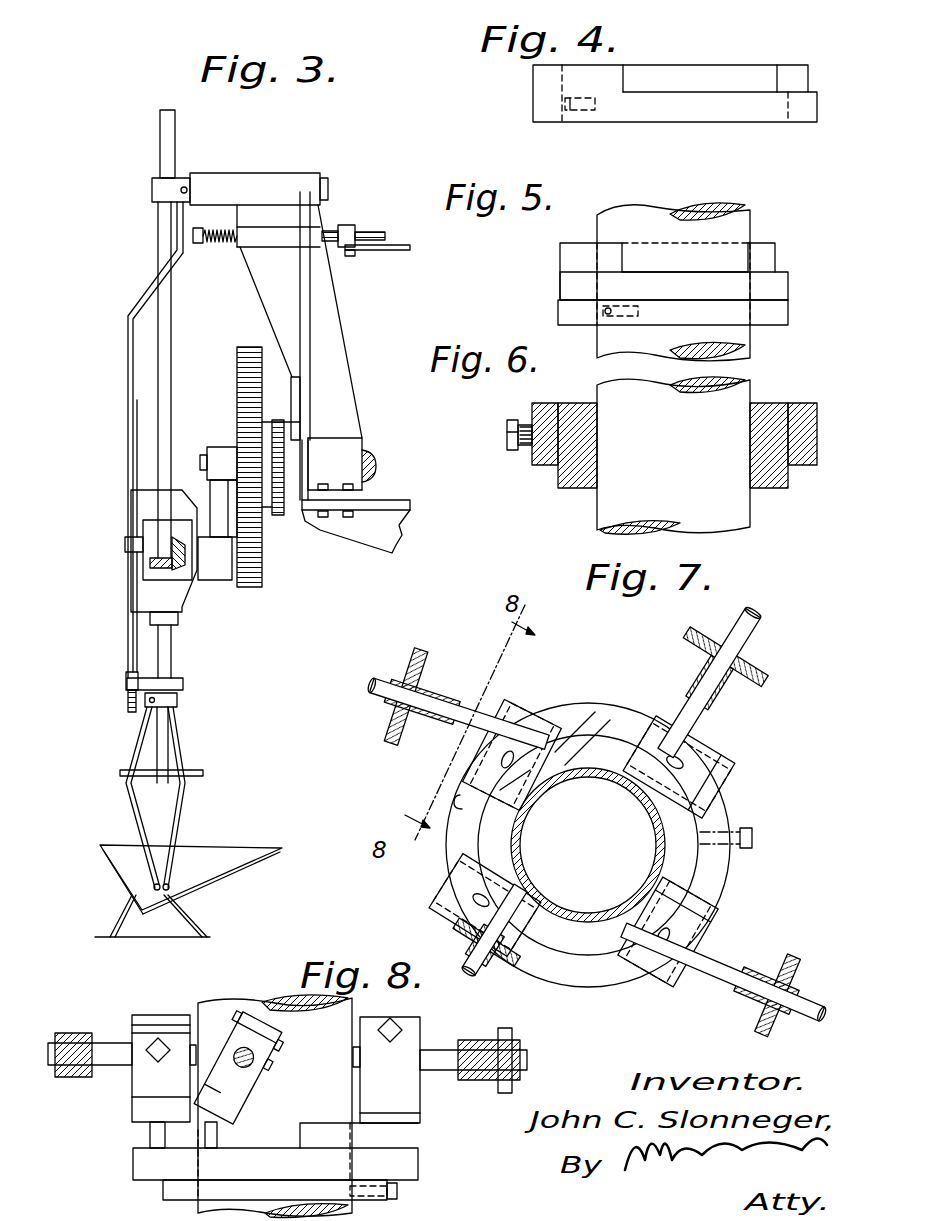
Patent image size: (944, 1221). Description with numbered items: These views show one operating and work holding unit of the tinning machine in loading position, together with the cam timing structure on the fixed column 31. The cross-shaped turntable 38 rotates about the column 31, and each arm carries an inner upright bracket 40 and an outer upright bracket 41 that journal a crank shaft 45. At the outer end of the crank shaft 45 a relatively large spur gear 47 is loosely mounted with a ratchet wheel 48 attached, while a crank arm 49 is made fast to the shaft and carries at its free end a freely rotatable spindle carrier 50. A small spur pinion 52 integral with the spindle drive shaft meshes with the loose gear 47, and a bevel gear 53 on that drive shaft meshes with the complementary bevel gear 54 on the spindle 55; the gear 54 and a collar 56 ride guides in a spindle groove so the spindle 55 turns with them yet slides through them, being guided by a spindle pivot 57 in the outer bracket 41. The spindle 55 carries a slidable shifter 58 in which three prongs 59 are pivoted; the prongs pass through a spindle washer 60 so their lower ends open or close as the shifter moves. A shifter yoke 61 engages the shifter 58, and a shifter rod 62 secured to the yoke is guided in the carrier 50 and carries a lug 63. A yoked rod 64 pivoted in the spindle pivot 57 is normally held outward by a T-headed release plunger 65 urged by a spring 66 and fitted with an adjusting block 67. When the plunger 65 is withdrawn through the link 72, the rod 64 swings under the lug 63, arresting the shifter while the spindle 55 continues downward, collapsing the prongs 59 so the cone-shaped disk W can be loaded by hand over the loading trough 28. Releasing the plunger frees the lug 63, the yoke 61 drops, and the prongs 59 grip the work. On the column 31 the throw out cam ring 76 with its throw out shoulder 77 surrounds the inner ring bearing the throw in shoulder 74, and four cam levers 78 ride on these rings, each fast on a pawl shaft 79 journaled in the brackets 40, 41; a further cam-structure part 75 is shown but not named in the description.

In FIG. 3, the trough 28 is at (120, 868).
In FIG. 3, the annular cone-shaped disk W is at (190, 920).
In FIG. 5, the fixed column 31 is at (635, 222).
In FIG. 6, the fixed column 31 is at (740, 410).
In FIG. 7, the fixed column 31 is at (660, 832).
In FIG. 8, the fixed column 31 is at (222, 1008).
In FIG. 3, the four-armed turntable 38 is at (363, 543).
In FIG. 7, the inner upright bracket 40 is at (430, 698).
In FIG. 8, the inner upright bracket 40 is at (70, 1033).
In FIG. 3, the outer upright bracket 41 is at (266, 288).
In FIG. 3, the crank shaft 45 is at (369, 460).
In FIG. 3, the spur gear 47 is at (240, 365).
In FIG. 3, the ratchet wheel 48 is at (280, 515).
In FIG. 3, the crank arm 49 is at (216, 465).
In FIG. 3, the spindle carrier 50 is at (143, 598).
In FIG. 3, the spur pinion 52 is at (235, 544).
In FIG. 3, the bevel gear 53 is at (185, 550).
In FIG. 3, the bevel gear 54 is at (150, 562).
In FIG. 3, the spindle 55 is at (171, 650).
In FIG. 3, the collar 56 is at (178, 617).
In FIG. 3, the spindle pivot 57 is at (152, 190).
In FIG. 3, the shifter 58 is at (177, 700).
In FIG. 3, the prongs 59 is at (146, 840).
In FIG. 3, the spindle washer 60 is at (122, 770).
In FIG. 3, the shifter yoke 61 is at (131, 672).
In FIG. 3, the shifter rod 62 is at (127, 626).
In FIG. 3, the lug 63 is at (125, 540).
In FIG. 3, the yoked rod 64 is at (128, 342).
In FIG. 3, the release plunger 65 is at (193, 235).
In FIG. 3, the spring 66 is at (218, 242).
In FIG. 3, the adjusting block 67 is at (347, 225).
In FIG. 3, the link 72 is at (385, 250).
In FIG. 7, the throw in shoulder 74 is at (612, 715).
In FIG. 8, the throw in shoulder 74 is at (217, 1135).
In FIG. 5, the clamp bar 75 is at (780, 282).
In FIG. 6, the clamp bar 75 is at (575, 488).
In FIG. 7, the clamp bar 75 is at (488, 850).
In FIG. 8, the clamp bar 75 is at (163, 1190).
In FIG. 4, the throw out cam ring 76 is at (661, 100).
In FIG. 6, the throw out cam ring 76 is at (538, 462).
In FIG. 7, the throw out cam ring 76 is at (578, 705).
In FIG. 8, the throw out cam ring 76 is at (420, 1150).
In FIG. 4, the throw out shoulder 77 is at (793, 78).
In FIG. 7, the throw out shoulder 77 is at (462, 782).
In FIG. 8, the throw out shoulder 77 is at (308, 1129).
In FIG. 7, the cam levers 78 is at (518, 712).
In FIG. 8, the cam levers 78 is at (138, 1072).
In FIG. 7, the pawl shaft 79 is at (700, 728).
In FIG. 8, the pawl shaft 79 is at (100, 1048).